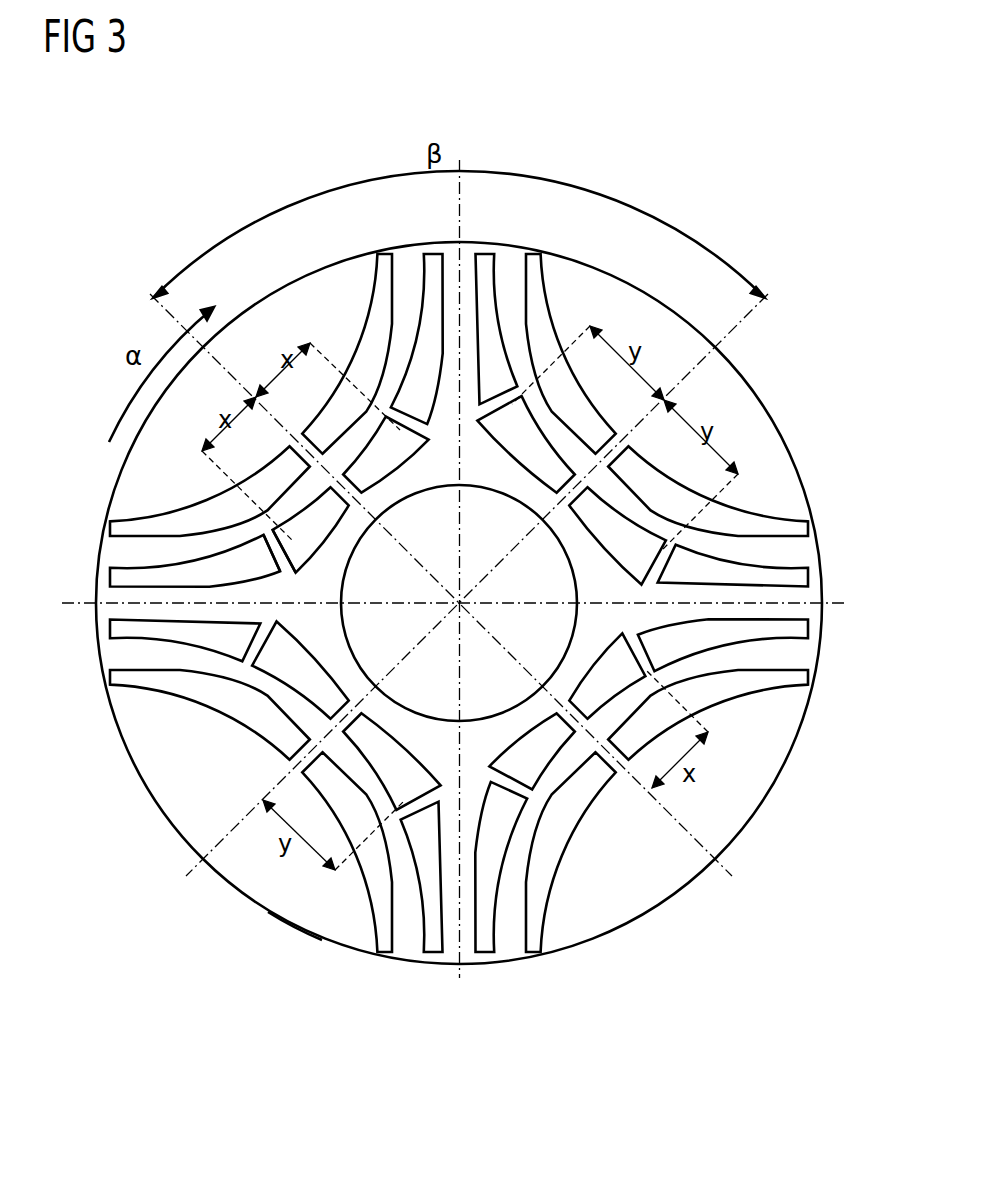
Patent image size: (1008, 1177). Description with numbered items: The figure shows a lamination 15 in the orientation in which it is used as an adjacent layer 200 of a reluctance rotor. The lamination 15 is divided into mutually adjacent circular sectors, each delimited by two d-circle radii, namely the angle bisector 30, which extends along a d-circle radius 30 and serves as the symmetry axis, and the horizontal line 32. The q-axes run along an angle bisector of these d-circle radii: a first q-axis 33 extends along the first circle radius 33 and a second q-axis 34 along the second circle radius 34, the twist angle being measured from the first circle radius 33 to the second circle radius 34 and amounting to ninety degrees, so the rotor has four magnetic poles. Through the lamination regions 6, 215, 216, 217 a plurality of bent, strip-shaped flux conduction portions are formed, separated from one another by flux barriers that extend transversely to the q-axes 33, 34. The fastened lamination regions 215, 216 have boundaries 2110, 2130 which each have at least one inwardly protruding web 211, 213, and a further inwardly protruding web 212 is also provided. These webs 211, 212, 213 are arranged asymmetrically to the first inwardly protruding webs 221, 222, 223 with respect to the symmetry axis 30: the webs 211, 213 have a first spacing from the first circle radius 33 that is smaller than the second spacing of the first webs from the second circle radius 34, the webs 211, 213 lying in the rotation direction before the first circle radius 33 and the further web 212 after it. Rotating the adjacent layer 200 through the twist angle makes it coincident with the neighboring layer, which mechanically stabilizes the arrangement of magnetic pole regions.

The lamination region 6 is at (243, 871).
The lamination 15 is at (290, 928).
The angle bisector 30 is at (459, 212).
The horizontal line 32 is at (72, 608).
The first circle radius 33 is at (166, 308).
The second circle radius 34 is at (762, 302).
The adjacent layer 200 is at (307, 166).
The inwardly protruding web 211 is at (292, 553).
The further inwardly protruding web 212 is at (424, 440).
The inwardly protruding web 213 is at (262, 535).
The fastened lamination region 215 is at (292, 583).
The fastened lamination region 216 is at (112, 548).
The lamination region 217 is at (410, 489).
The first inwardly protruding web 221 is at (656, 577).
The first inwardly protruding web 222 is at (493, 403).
The first inwardly protruding web 223 is at (660, 548).
The boundary 2110 is at (188, 582).
The boundary 2130 is at (160, 572).